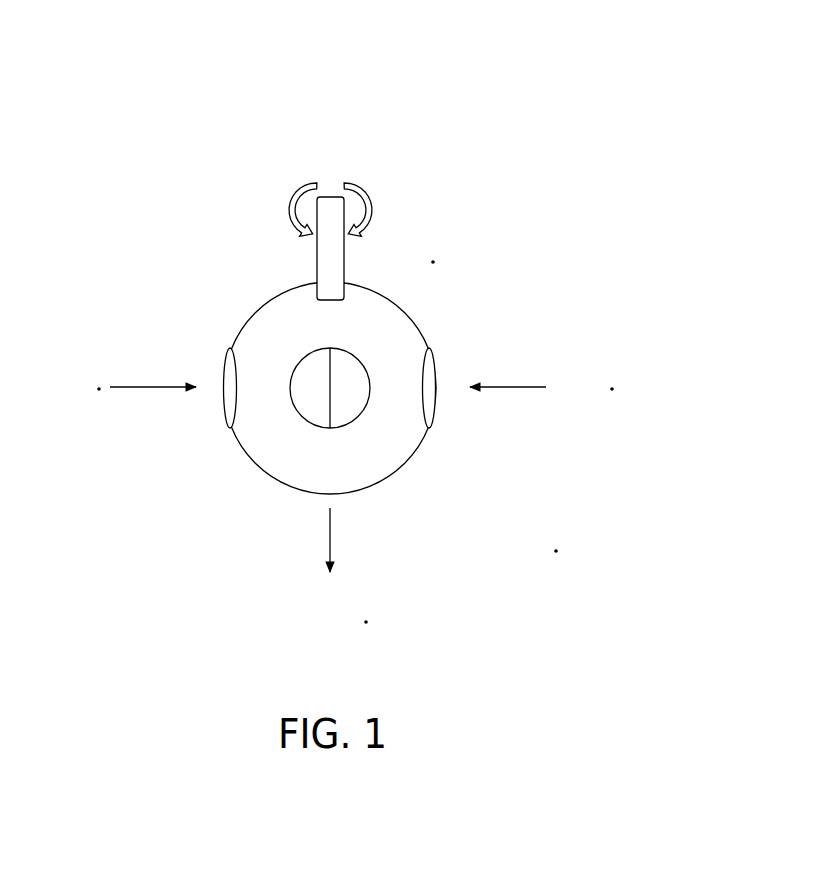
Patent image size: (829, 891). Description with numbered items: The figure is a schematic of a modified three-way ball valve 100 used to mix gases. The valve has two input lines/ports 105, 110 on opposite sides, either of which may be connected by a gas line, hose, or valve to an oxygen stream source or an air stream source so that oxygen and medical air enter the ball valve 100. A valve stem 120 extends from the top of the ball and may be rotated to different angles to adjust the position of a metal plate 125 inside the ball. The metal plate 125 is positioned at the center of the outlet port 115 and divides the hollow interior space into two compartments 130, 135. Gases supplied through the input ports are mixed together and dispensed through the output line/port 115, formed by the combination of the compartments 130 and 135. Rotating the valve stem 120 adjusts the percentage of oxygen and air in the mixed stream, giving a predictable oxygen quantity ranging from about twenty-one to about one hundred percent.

The modified three-way ball valve 100 is at (496, 124).
The input line/port 105 is at (225, 372).
The input line/port 110 is at (436, 372).
The output line/port 115 is at (330, 494).
The valve stem 120 is at (345, 208).
The metal plate 125 is at (340, 397).
The compartment 130 is at (313, 379).
The compartment 135 is at (347, 379).